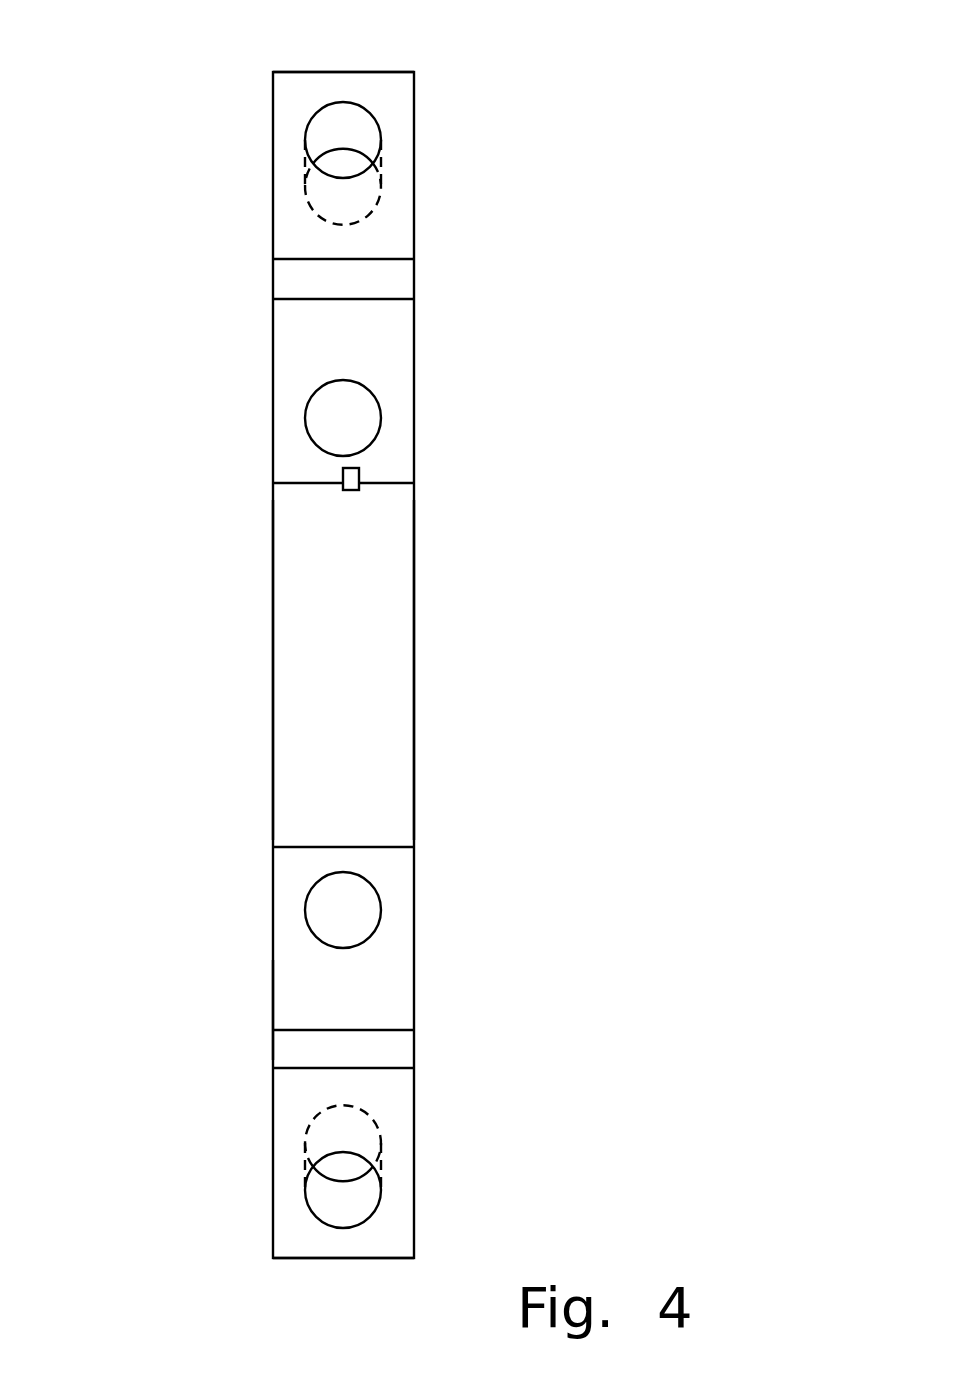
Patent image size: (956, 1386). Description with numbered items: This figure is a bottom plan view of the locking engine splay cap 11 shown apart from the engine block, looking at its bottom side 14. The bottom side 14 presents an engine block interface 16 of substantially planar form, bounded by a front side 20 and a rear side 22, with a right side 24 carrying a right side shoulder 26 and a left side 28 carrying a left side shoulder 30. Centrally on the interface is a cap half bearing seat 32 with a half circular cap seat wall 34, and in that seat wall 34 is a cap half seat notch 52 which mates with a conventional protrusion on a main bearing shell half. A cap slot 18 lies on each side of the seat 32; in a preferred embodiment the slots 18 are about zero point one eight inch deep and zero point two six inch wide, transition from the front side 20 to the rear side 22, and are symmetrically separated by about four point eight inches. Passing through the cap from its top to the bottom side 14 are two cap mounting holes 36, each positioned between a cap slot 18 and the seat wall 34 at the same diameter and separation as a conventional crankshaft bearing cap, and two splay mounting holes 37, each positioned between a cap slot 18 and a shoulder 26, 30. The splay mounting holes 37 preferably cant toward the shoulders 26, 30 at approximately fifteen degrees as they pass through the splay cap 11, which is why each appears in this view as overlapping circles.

The splay cap 11 is at (186, 677).
The bottom side 14 is at (412, 650).
The engine block interface 16 is at (387, 336).
The cap slot 18 is at (387, 282).
The front side 20 is at (272, 1008).
The rear side 22 is at (414, 852).
The right side 24 is at (302, 1297).
The right side shoulder 26 is at (372, 1258).
The left side 28 is at (412, 129).
The left side shoulder 30 is at (370, 71).
The cap half bearing seat 32 is at (412, 670).
The cap seat wall 34 is at (373, 580).
The cap mounting holes 36 is at (368, 418).
The splay mounting holes 37 is at (370, 133).
The cap half seat notch 52 is at (352, 490).